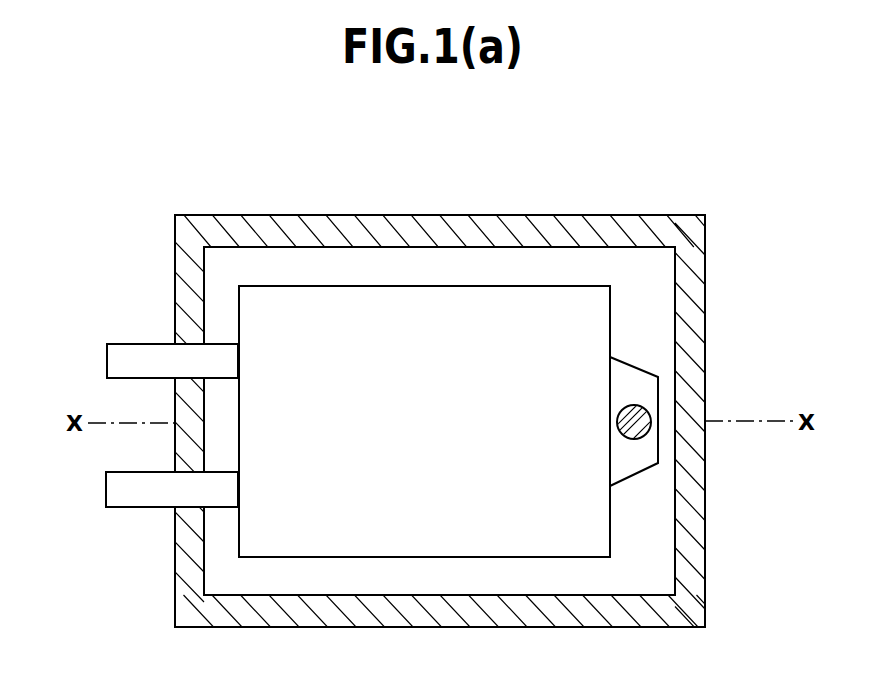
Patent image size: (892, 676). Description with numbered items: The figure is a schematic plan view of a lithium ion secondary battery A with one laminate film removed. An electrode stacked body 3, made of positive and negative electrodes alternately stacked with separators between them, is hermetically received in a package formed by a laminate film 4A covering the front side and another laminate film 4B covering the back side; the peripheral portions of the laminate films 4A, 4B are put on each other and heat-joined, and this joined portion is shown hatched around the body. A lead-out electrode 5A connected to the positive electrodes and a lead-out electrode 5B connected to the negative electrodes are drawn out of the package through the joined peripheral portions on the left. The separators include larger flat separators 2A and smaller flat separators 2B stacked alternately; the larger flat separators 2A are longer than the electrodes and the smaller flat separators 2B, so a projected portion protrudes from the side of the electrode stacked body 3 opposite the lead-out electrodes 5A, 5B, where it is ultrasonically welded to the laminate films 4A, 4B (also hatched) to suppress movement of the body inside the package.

The battery A is at (451, 359).
The larger flat separator 2A is at (633, 383).
The smaller flat separator 2B is at (424, 349).
The electrode stacked body 3 is at (478, 286).
The laminate film 4A is at (451, 385).
The laminate film 4B is at (604, 262).
The lead-out electrode 5A is at (126, 355).
The lead-out electrode 5B is at (125, 498).